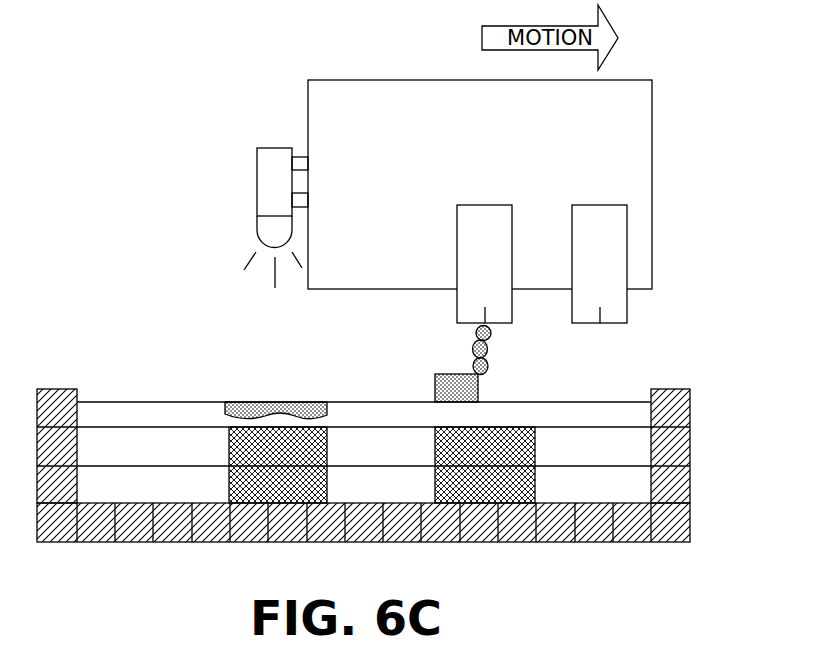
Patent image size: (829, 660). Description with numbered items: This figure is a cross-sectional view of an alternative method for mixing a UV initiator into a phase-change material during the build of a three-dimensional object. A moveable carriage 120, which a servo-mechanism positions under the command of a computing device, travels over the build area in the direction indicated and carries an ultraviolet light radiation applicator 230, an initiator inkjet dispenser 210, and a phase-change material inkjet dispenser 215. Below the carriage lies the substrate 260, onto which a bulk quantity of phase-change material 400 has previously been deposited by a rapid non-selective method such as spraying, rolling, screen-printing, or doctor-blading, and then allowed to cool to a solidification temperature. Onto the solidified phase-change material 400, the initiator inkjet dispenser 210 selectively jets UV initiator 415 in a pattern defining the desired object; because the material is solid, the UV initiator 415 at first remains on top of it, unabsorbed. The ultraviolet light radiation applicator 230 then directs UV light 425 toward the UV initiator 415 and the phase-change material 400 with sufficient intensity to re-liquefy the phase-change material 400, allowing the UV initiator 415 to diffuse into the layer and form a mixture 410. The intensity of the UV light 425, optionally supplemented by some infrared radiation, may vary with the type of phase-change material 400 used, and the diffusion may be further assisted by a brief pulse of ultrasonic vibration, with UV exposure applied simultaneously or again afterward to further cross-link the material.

The moveable carriage 120 is at (498, 128).
The initiator inkjet dispenser 210 is at (500, 265).
The phase-change material inkjet dispenser 215 is at (600, 265).
The ultraviolet light radiation applicator 230 is at (258, 218).
The UV light 425 is at (220, 255).
The phase-change material 400 is at (394, 441).
The mixture 410 is at (280, 402).
The UV initiator 415 is at (474, 363).
The substrate 260 is at (547, 542).